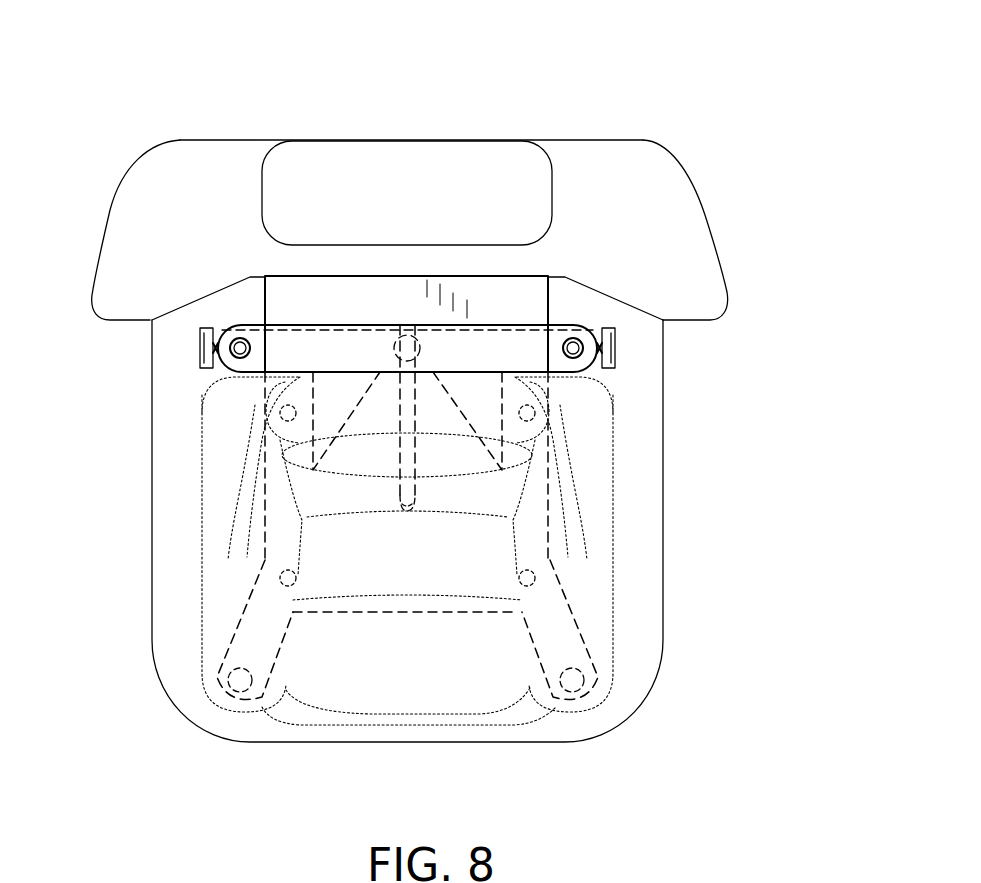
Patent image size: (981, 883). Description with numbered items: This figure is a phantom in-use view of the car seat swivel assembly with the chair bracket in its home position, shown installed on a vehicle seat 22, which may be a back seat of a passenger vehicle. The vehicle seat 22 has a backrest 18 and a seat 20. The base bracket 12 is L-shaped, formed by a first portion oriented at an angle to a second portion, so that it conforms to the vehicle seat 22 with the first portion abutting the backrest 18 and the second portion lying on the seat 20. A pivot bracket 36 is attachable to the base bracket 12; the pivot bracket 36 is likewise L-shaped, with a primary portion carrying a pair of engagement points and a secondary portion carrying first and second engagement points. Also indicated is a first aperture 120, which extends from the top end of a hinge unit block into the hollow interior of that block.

The backrest 18 is at (250, 140).
The vehicle seat 22 is at (682, 138).
The base bracket 12 is at (548, 277).
The first aperture 120 is at (400, 453).
The seat 20 is at (673, 463).
The pivot bracket 36 is at (550, 572).